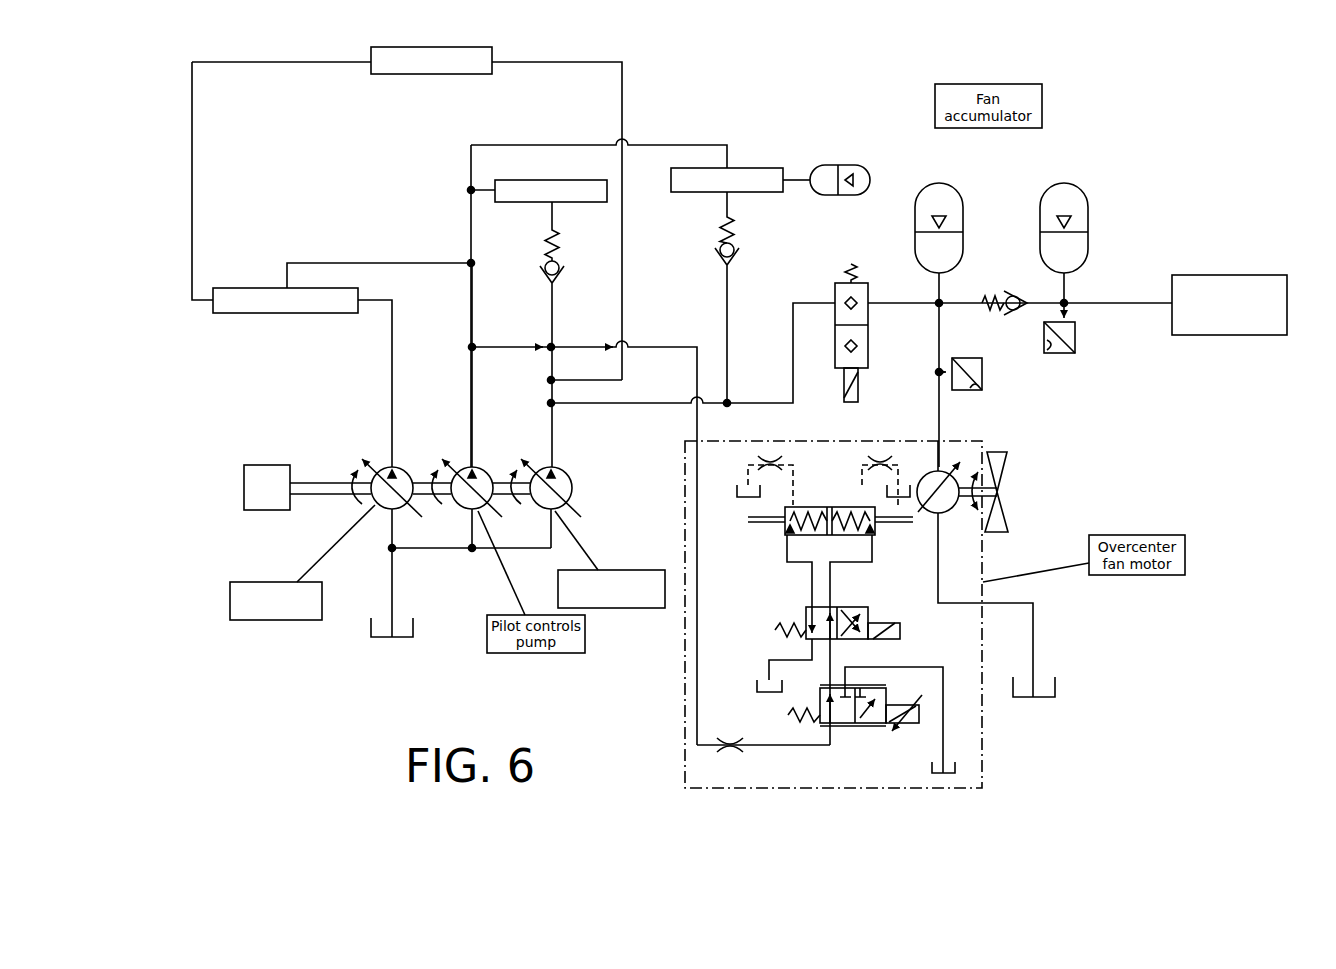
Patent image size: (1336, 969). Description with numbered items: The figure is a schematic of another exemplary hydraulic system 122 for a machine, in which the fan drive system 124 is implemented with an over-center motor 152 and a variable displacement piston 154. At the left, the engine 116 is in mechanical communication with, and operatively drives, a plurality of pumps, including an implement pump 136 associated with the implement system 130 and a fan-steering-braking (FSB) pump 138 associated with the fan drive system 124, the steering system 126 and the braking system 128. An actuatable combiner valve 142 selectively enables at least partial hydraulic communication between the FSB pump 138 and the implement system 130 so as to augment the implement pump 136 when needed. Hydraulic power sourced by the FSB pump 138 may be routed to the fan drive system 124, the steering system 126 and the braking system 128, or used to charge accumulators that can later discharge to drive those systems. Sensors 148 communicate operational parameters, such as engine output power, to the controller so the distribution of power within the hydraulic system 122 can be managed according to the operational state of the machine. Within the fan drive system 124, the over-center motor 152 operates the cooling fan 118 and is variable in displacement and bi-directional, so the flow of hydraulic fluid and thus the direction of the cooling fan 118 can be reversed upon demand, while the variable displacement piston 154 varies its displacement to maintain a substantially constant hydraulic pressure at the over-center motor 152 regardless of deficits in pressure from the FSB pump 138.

The engine 116 is at (244, 495).
The cooling fan 118 is at (1005, 525).
The hydraulic system 122 is at (1172, 146).
The fan drive system 124 is at (1052, 468).
The steering system 126 is at (525, 203).
The braking system 128 is at (743, 168).
The implement system 130 is at (247, 288).
The implement pump 136 is at (400, 478).
The fan-steering-braking (FSB) pump 138 is at (570, 484).
The combiner valve 142 is at (492, 72).
The sensors 148 is at (838, 168).
The over-center motor 152 is at (937, 505).
The variable displacement piston 154 is at (785, 522).